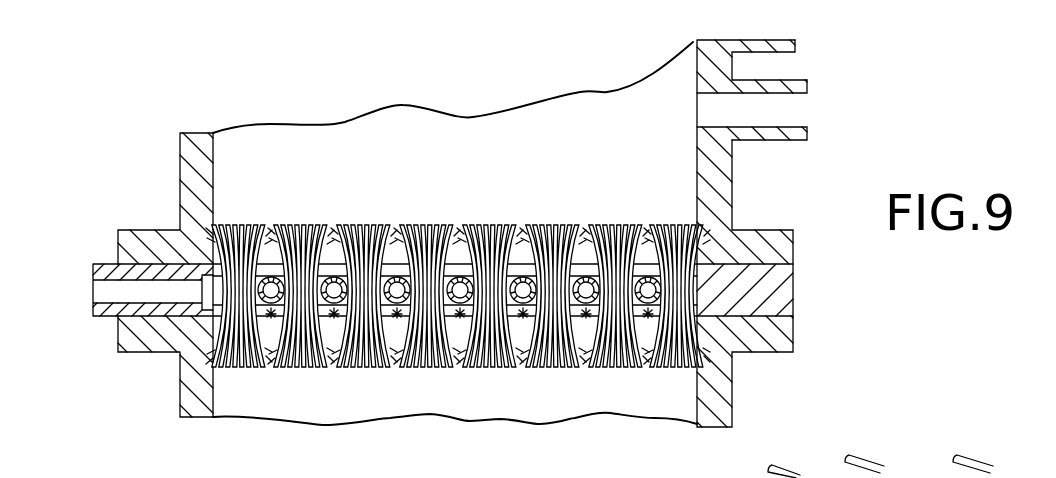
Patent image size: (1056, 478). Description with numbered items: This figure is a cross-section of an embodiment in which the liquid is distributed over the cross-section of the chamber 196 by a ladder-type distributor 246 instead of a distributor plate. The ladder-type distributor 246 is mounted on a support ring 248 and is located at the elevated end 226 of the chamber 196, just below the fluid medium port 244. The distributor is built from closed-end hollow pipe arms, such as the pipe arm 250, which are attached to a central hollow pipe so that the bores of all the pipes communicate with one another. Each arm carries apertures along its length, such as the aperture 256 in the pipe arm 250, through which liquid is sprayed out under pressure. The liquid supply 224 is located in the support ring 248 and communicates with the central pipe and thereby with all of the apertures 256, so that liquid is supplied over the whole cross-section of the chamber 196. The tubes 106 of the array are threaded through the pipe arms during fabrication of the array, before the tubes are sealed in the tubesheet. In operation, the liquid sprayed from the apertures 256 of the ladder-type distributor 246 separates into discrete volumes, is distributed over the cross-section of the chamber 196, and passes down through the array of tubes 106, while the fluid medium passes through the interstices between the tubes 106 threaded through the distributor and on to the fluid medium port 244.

The tubes 106 is at (618, 262).
The chamber 196 is at (655, 170).
The liquid supply 224 is at (96, 292).
The elevated end 226 is at (737, 67).
The fluid medium port 244 is at (788, 112).
The ladder-type distributor 246 is at (465, 232).
The support ring 248 is at (523, 263).
The pipe arm 250 is at (585, 320).
The aperture 256 is at (585, 320).